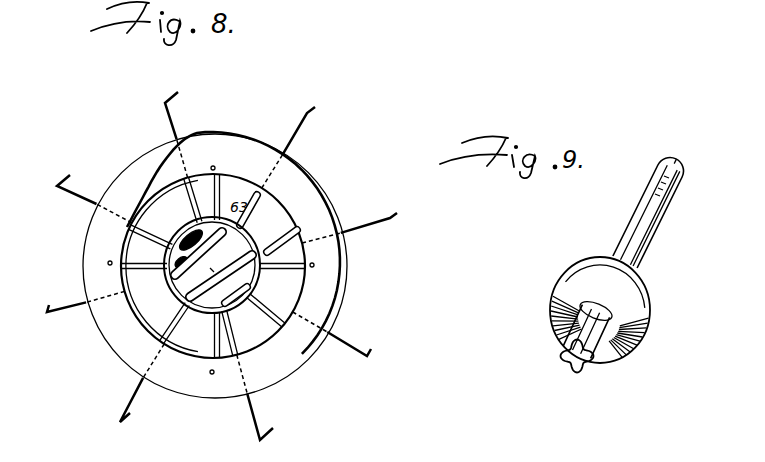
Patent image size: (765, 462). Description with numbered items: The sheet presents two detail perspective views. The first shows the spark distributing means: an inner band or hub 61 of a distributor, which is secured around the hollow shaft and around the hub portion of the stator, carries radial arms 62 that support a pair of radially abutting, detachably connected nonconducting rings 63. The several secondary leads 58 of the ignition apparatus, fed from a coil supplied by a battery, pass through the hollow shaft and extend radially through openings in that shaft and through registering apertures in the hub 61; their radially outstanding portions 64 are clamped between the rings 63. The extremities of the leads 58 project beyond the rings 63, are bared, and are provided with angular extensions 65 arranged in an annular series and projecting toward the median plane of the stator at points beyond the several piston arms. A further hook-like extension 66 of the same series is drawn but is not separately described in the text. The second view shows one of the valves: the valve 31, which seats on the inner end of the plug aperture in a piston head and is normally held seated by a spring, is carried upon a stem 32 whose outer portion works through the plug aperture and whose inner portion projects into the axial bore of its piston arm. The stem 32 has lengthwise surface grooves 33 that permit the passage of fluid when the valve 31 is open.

In FIG. 8, the secondary leads 58 is at (212, 264).
In FIG. 8, the inner band or hub 61 is at (240, 304).
In FIG. 8, the radial arms 62 is at (210, 200).
In FIG. 8, the rings 63 is at (330, 263).
In FIG. 8, the radially outstanding portions 64 is at (276, 311).
In FIG. 8, the angular extensions 65 is at (175, 130).
In FIG. 8, the hook 66 is at (294, 137).
In FIG. 9, the valve 31 is at (640, 307).
In FIG. 9, the stem 32 is at (648, 237).
In FIG. 9, the lengthwise surface grooves 33 is at (652, 201).